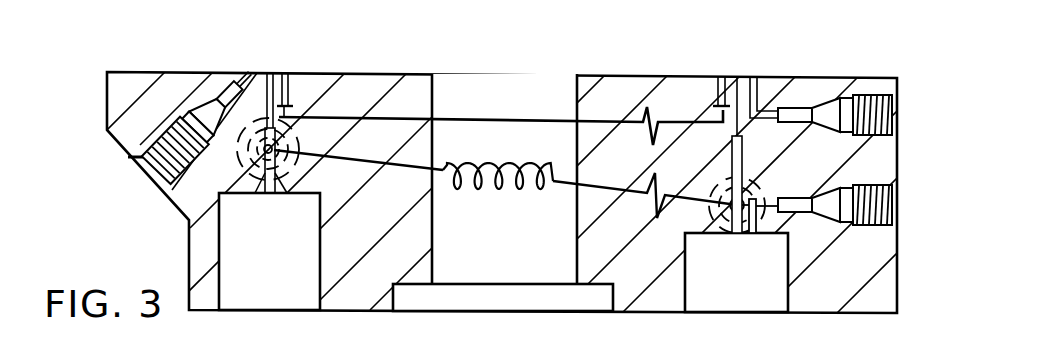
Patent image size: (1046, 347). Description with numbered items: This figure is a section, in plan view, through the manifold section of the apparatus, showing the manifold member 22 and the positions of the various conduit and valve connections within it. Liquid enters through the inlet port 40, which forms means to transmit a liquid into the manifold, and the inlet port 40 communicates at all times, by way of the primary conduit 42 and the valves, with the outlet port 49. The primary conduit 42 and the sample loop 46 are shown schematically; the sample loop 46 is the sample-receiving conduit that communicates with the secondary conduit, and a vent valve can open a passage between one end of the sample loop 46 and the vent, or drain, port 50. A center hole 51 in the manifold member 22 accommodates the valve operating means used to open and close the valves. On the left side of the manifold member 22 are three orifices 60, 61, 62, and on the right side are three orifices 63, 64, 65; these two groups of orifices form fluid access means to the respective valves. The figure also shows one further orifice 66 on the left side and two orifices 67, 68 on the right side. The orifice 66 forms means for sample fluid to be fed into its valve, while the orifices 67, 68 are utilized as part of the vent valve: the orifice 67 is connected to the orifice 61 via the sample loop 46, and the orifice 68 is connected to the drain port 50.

The manifold member 22 is at (843, 78).
The inlet port 40 is at (893, 112).
The primary conduit 42 is at (457, 121).
The sample loop 46 is at (556, 183).
The outlet port 49 is at (152, 176).
The vent port 50 is at (893, 207).
The center hole 51 is at (492, 260).
The orifice 60 is at (252, 73).
The orifice 61 is at (270, 73).
The orifice 62 is at (285, 73).
The orifice 63 is at (719, 78).
The orifice 64 is at (737, 78).
The orifice 65 is at (753, 78).
The orifice 66 is at (272, 193).
The orifice 67 is at (733, 234).
The orifice 68 is at (751, 234).